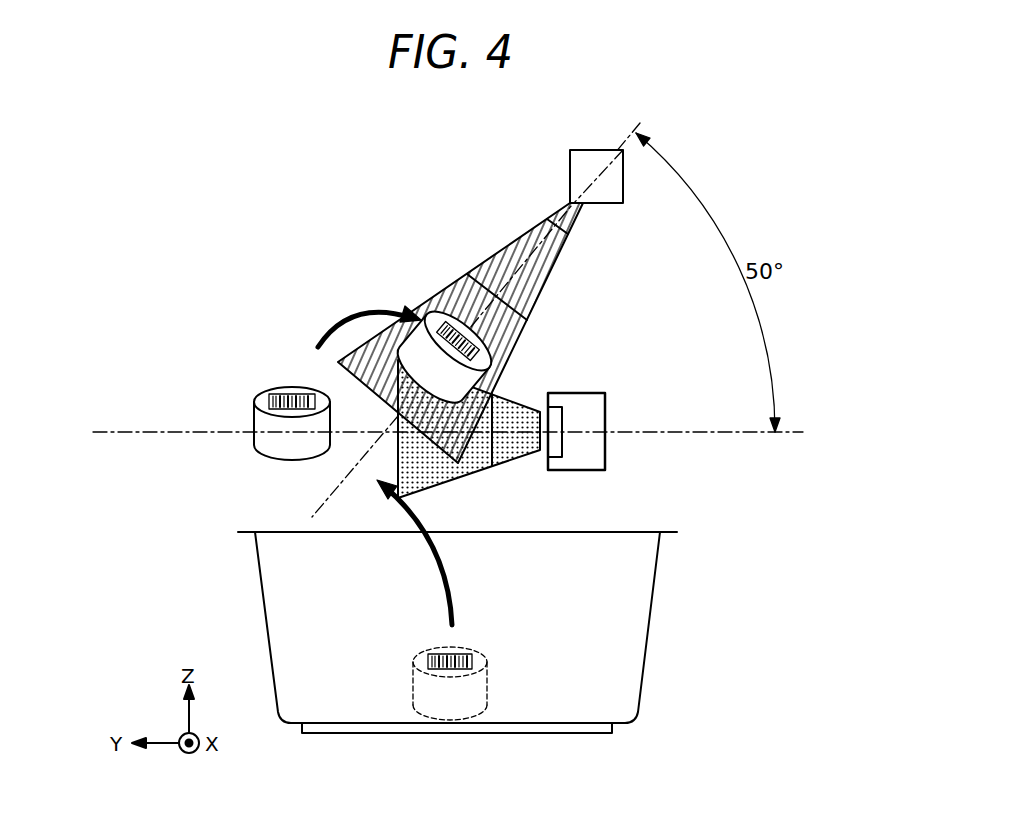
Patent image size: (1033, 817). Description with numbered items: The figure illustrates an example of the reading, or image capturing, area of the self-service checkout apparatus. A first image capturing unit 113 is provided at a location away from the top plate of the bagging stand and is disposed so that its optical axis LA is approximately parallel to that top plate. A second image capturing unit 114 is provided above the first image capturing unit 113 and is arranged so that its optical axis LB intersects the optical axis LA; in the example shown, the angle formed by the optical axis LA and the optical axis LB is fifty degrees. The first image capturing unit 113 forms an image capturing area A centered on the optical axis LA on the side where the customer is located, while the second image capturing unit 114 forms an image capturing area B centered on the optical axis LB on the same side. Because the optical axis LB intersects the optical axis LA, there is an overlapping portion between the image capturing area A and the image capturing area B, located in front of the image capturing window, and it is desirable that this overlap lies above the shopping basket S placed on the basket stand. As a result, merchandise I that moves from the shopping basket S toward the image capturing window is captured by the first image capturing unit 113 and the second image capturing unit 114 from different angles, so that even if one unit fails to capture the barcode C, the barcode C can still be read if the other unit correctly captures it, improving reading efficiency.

The second image capturing unit 114 is at (594, 150).
The first image capturing unit 113 is at (605, 455).
The image capturing area A is at (511, 397).
The image capturing area B is at (513, 240).
The barcode C is at (456, 312).
The merchandise I is at (436, 303).
The optical axis LA is at (125, 432).
The optical axis LB is at (330, 496).
The shopping basket S is at (648, 631).